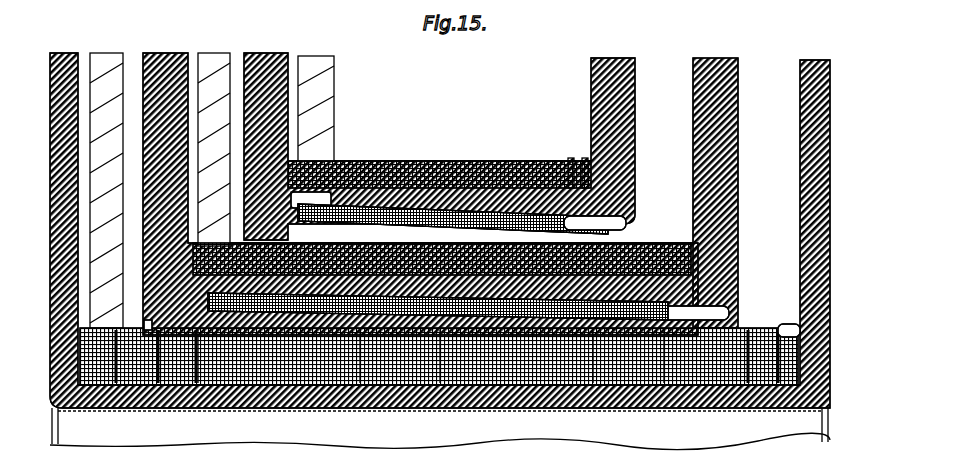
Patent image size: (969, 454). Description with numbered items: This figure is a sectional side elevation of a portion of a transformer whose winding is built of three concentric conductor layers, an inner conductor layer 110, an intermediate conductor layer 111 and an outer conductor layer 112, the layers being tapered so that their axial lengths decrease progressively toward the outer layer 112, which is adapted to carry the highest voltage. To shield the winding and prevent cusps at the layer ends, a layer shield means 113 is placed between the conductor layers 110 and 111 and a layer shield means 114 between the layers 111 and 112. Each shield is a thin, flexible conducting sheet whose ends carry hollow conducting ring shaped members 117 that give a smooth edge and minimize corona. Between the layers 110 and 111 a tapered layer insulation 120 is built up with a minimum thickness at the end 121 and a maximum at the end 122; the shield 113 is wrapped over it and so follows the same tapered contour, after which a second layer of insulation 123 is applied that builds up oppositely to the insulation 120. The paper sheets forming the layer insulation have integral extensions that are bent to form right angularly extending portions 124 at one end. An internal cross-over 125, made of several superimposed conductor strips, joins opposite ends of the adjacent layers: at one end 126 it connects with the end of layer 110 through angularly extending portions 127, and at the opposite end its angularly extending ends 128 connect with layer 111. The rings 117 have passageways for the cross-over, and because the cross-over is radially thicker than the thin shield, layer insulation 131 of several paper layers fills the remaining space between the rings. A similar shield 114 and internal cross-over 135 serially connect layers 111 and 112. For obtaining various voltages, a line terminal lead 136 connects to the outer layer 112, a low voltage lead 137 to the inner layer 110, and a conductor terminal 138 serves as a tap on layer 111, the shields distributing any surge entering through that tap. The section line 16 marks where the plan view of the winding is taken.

The section line 16— 16 is at (42, 268).
The inner conductor layer 110 is at (740, 345).
The intermediate conductor layer 111 is at (636, 240).
The outer conductor layer 112 is at (452, 158).
The layer shield means 113 is at (586, 322).
The layer shield means 114 is at (482, 226).
The hollow conducting ring shaped members 117 is at (624, 206).
The tapered layer insulation 120 is at (357, 295).
The end of minimum insulation 121 is at (657, 322).
The end of maximum insulation 122 is at (192, 320).
The second layer of insulation 123 is at (522, 300).
The right angularly extending portions 124 is at (156, 47).
The internal cross-over 125 is at (436, 295).
The end of internal cross-over 126 is at (780, 316).
The angularly extending portions 127 is at (776, 378).
The angularly extending ends 128 is at (138, 313).
The layer insulation 131 is at (522, 170).
The internal cross-over 135 is at (400, 186).
The line terminal lead 136 is at (313, 50).
The low voltage lead 137 is at (98, 47).
The conductor terminal 138 is at (210, 47).